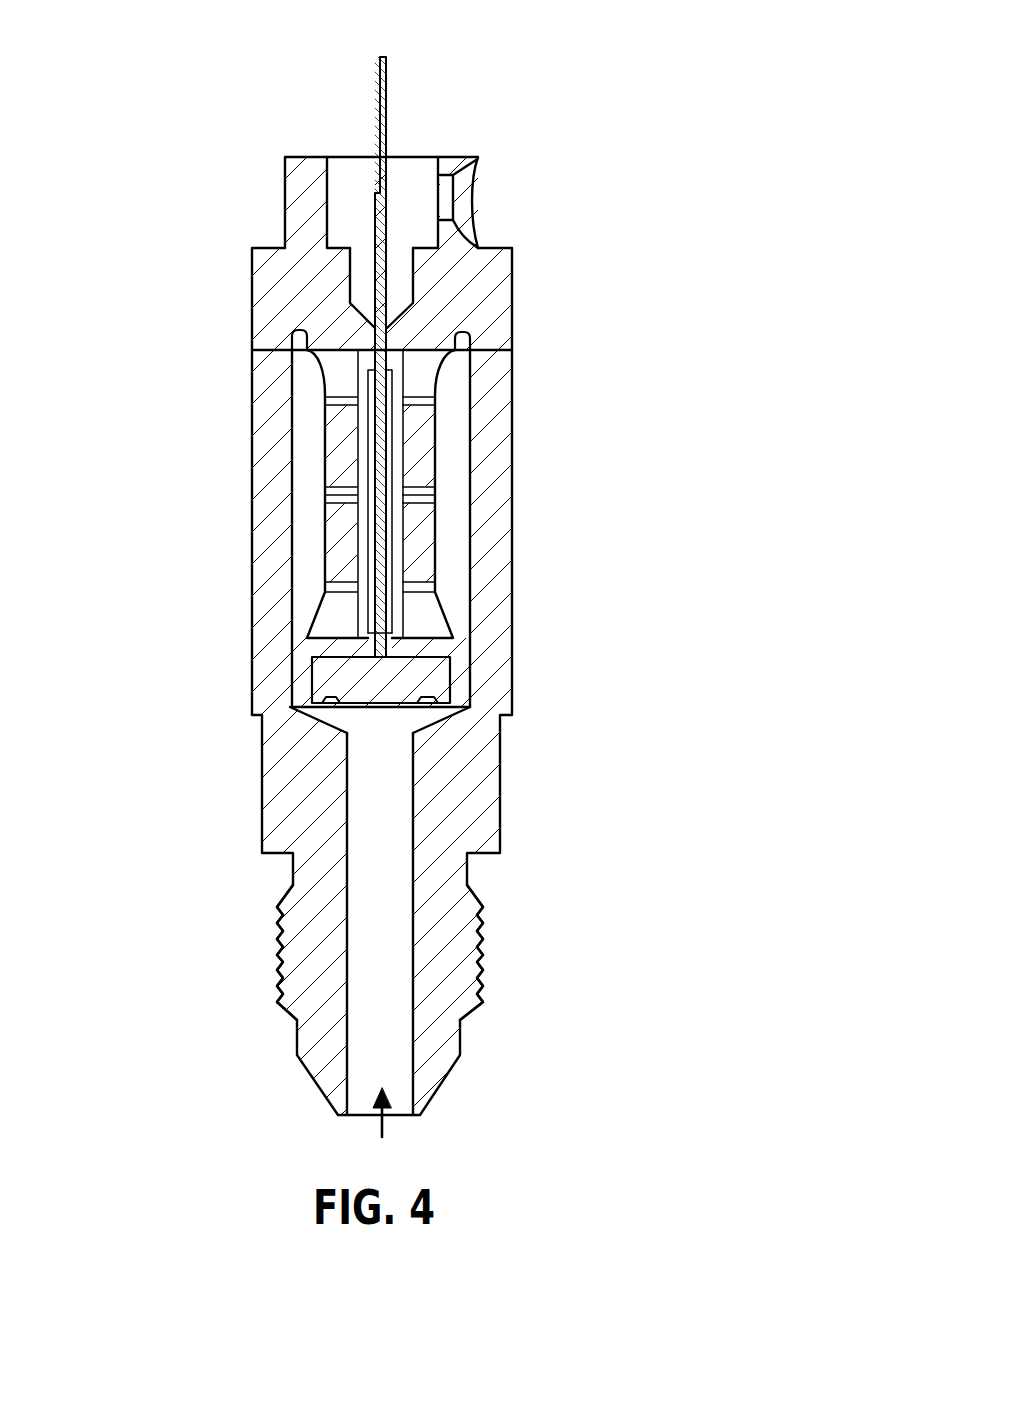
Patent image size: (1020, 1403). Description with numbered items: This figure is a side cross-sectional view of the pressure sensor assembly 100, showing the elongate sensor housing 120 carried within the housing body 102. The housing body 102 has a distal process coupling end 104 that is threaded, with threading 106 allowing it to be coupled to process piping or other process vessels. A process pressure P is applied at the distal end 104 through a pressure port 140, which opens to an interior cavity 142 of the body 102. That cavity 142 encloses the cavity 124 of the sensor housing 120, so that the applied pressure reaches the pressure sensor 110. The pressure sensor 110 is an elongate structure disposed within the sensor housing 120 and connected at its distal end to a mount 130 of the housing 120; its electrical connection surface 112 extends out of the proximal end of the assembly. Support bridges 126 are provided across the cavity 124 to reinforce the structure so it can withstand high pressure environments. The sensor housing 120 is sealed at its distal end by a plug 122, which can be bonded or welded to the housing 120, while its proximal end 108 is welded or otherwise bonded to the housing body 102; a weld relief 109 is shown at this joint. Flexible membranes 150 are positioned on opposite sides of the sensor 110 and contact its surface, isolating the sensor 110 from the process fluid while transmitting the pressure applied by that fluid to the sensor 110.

The pressure sensor assembly 100 is at (732, 140).
The housing body 102 is at (250, 658).
The process coupling end 104 is at (479, 952).
The threads 106 is at (278, 970).
The proximal end 108 is at (512, 294).
The weld relief 109 is at (300, 340).
The pressure sensor 110 is at (320, 334).
The electrical connection surface 112 is at (386, 97).
The sensor housing 120 is at (393, 635).
The plug 122 is at (417, 677).
The cavity 124 is at (418, 497).
The support bridges 126 is at (330, 440).
The mount 130 is at (373, 630).
The pressure port 140 is at (390, 1027).
The interior cavity 142 is at (452, 603).
The flexible membranes 150 is at (370, 563).